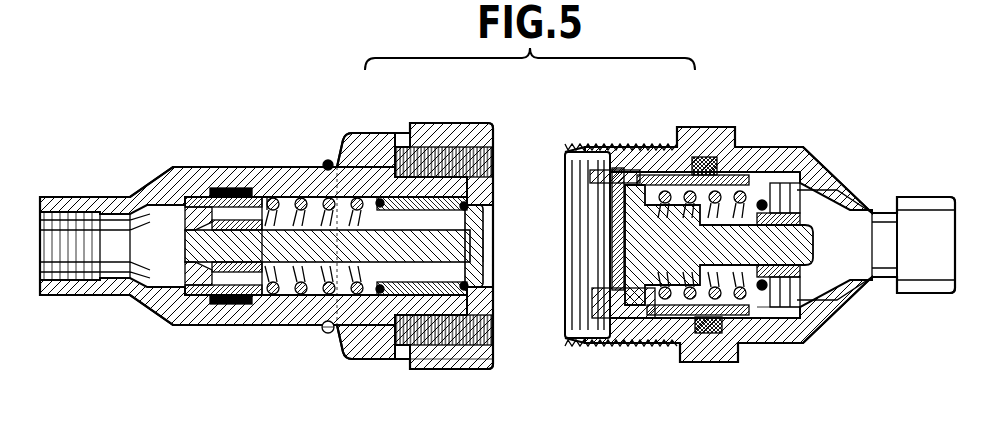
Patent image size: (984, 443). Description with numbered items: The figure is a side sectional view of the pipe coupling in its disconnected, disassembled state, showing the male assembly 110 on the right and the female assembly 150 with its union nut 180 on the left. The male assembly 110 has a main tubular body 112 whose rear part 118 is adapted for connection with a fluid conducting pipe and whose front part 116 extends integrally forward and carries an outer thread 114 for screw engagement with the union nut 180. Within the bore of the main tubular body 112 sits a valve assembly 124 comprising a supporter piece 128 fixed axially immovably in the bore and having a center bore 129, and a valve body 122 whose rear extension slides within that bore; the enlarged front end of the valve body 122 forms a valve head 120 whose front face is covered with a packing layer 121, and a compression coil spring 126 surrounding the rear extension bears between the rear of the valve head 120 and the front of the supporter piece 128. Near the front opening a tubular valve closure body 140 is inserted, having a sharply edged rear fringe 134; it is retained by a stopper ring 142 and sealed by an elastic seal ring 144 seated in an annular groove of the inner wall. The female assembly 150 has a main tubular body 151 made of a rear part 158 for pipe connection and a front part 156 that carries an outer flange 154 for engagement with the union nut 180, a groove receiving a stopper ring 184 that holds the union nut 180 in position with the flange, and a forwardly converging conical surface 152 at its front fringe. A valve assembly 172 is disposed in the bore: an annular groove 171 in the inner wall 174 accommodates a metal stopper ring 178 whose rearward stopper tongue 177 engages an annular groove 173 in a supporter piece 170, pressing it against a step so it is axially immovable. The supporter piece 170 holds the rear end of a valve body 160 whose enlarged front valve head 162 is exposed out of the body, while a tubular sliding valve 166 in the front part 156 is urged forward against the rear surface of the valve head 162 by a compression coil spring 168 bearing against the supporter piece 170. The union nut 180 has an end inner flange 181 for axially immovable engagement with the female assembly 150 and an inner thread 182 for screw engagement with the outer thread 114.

The male assembly 110 is at (847, 168).
The main tubular body 112 is at (793, 150).
The outer thread 114 is at (590, 330).
The front part 116 is at (617, 330).
The rear part 118 is at (922, 297).
The valve head 120 is at (647, 303).
The packing layer 121 is at (618, 233).
The valve body 122 is at (700, 297).
The valve assembly 124 is at (714, 362).
The compression coil spring 126 is at (723, 275).
The supporter piece 128 is at (762, 310).
The center bore 129 is at (767, 330).
The rear fringe 134 is at (745, 150).
The valve closure body 140 is at (612, 153).
The stopper ring 142 is at (577, 150).
The elastic seal ring 144 is at (693, 168).
The female assembly 150 is at (137, 186).
The main tubular body 151 is at (165, 312).
The conical surface 152 is at (429, 222).
The outer flange 154 is at (365, 152).
The front part 156 is at (315, 198).
The rear part 158 is at (77, 292).
The valve body 160 is at (308, 262).
The valve head 162 is at (478, 264).
The sliding valve 166 is at (445, 292).
The compression coil spring 168 is at (290, 296).
The supporter piece 170 is at (195, 298).
The annular groove 171 is at (210, 205).
The valve assembly 172 is at (333, 270).
The annular groove 173 is at (218, 195).
The inner wall 174 is at (277, 193).
The stopper tongue 177 is at (208, 197).
The metal stopper ring 178 is at (233, 296).
The union nut 180 is at (351, 136).
The end inner flange 181 is at (340, 332).
The inner thread 182 is at (490, 347).
The stopper ring 184 is at (326, 161).